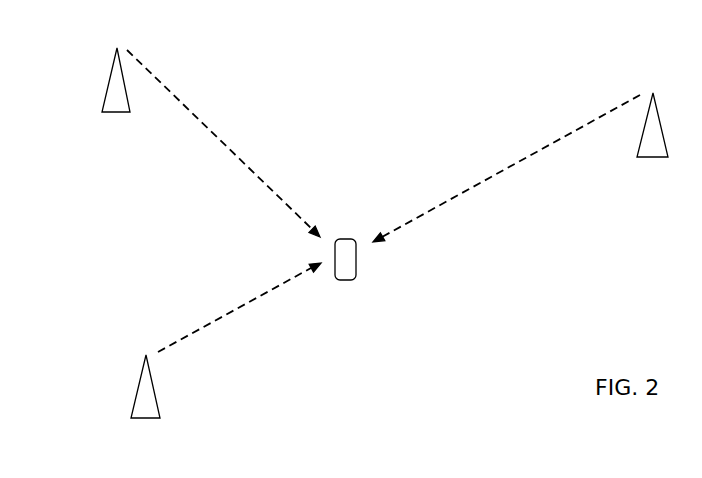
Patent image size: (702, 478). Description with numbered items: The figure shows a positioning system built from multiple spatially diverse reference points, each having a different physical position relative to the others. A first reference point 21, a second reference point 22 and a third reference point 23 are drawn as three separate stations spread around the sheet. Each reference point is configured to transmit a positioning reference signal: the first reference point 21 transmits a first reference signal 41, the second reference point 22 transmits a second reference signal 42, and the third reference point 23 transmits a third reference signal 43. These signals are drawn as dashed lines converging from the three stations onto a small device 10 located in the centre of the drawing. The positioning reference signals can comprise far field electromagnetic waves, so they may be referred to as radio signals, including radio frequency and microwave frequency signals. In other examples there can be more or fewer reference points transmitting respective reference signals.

The first reference point 21 is at (102, 100).
The second reference point 22 is at (653, 92).
The third reference point 23 is at (138, 373).
The first reference signal 41 is at (193, 117).
The second reference signal 42 is at (497, 177).
The third reference signal 43 is at (215, 320).
The receiver device 10 is at (352, 268).